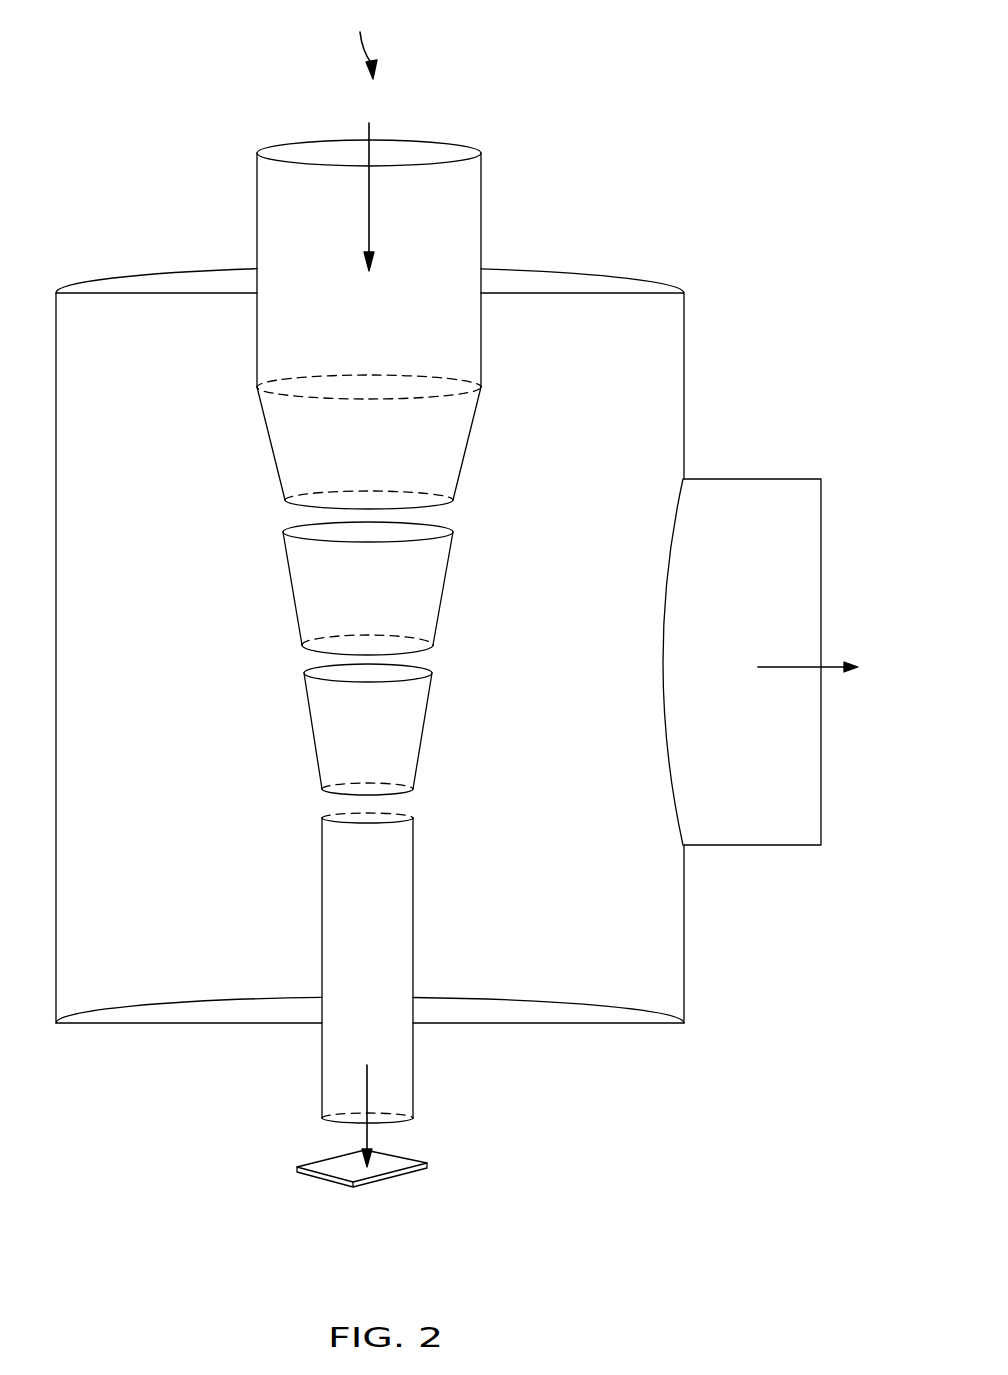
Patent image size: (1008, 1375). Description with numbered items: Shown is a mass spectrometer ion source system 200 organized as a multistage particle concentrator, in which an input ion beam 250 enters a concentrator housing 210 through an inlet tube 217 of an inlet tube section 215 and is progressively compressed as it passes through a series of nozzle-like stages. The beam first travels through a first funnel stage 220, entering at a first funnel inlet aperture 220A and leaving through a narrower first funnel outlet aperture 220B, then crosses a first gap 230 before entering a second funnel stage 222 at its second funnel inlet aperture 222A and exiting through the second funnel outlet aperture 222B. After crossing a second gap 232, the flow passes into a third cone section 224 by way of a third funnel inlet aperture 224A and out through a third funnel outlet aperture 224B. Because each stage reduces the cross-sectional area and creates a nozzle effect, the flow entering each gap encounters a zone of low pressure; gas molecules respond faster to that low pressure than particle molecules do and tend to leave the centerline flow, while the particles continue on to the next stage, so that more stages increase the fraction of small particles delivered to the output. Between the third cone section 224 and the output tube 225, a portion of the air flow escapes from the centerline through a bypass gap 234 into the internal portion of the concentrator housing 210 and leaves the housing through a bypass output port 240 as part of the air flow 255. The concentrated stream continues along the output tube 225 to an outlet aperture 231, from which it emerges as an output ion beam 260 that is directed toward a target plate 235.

The mass spectrometer ion source system 200 is at (363, 41).
The concentrator housing 210 is at (684, 390).
The inlet tube section 215 is at (510, 387).
The inlet tube 217 is at (257, 150).
The first funnel stage 220 is at (505, 399).
The first funnel inlet aperture 220A is at (257, 387).
The first funnel outlet aperture 220B is at (286, 500).
The second funnel stage 222 is at (479, 537).
The second funnel inlet aperture 222A is at (283, 531).
The second funnel outlet aperture 222B is at (302, 645).
The third cone section 224 is at (452, 675).
The third funnel inlet aperture 224A is at (304, 673).
The third funnel outlet aperture 224B is at (322, 790).
The output tube 225 is at (433, 822).
The first gap 230 is at (486, 506).
The outlet aperture 231 is at (322, 1118).
The second gap 232 is at (463, 642).
The bypass gap 234 is at (435, 793).
The target plate 235 is at (385, 1178).
The bypass output port 240 is at (808, 775).
The input ion beam 250 is at (369, 163).
The air flow 255 is at (782, 665).
The output ion beam 260 is at (380, 1133).